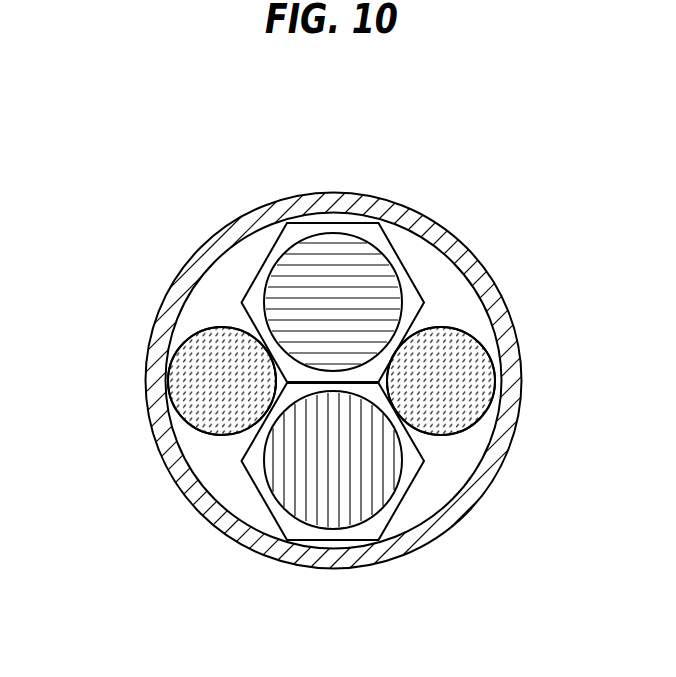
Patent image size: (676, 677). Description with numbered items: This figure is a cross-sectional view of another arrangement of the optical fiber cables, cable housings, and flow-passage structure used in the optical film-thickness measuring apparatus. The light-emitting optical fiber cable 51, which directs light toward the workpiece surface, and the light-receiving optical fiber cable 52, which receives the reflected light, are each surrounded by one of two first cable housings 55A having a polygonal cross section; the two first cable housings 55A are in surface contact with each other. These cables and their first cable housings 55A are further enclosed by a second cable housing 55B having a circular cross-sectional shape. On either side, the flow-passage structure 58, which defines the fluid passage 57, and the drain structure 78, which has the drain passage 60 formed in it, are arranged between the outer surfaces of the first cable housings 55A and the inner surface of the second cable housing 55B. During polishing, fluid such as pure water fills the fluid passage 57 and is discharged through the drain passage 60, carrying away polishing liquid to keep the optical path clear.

The light-emitting optical fiber cable 51 is at (327, 267).
The light-receiving optical fiber cable 52 is at (328, 506).
The first cable housing 55A is at (420, 250).
The second cable housing 55B is at (195, 258).
The fluid passage 57 is at (238, 397).
The flow-passage structure 58 is at (222, 435).
The drain passage 60 is at (459, 397).
The drain structure 78 is at (443, 328).